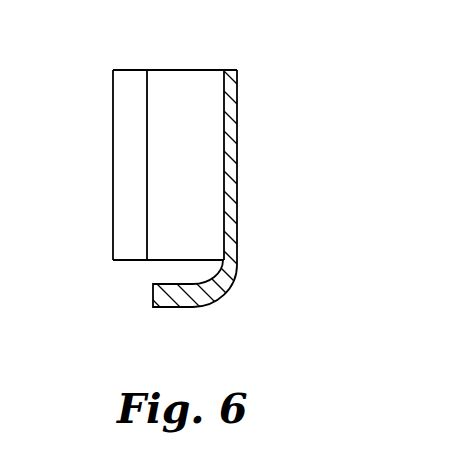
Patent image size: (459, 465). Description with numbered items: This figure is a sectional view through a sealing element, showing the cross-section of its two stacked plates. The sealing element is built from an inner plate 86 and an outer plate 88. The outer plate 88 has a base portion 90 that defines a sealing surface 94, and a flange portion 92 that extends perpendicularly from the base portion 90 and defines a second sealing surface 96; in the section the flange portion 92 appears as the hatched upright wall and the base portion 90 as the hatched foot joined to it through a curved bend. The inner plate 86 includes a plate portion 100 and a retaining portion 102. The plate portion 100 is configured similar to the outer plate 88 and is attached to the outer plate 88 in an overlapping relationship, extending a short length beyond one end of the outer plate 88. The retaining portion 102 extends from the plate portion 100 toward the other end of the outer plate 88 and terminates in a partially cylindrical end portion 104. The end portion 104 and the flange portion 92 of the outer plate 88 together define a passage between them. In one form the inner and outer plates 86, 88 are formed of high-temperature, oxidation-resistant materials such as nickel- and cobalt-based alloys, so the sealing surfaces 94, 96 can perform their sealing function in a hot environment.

The inner plate 86 is at (229, 232).
The outer plate 88 is at (229, 232).
The base portion 90 is at (199, 303).
The flange portion 92 is at (237, 201).
The sealing surface 94 is at (134, 302).
The sealing surface 96 is at (237, 150).
The plate portion 100 is at (158, 284).
The retaining portion 102 is at (170, 70).
The end portion 104 is at (127, 96).